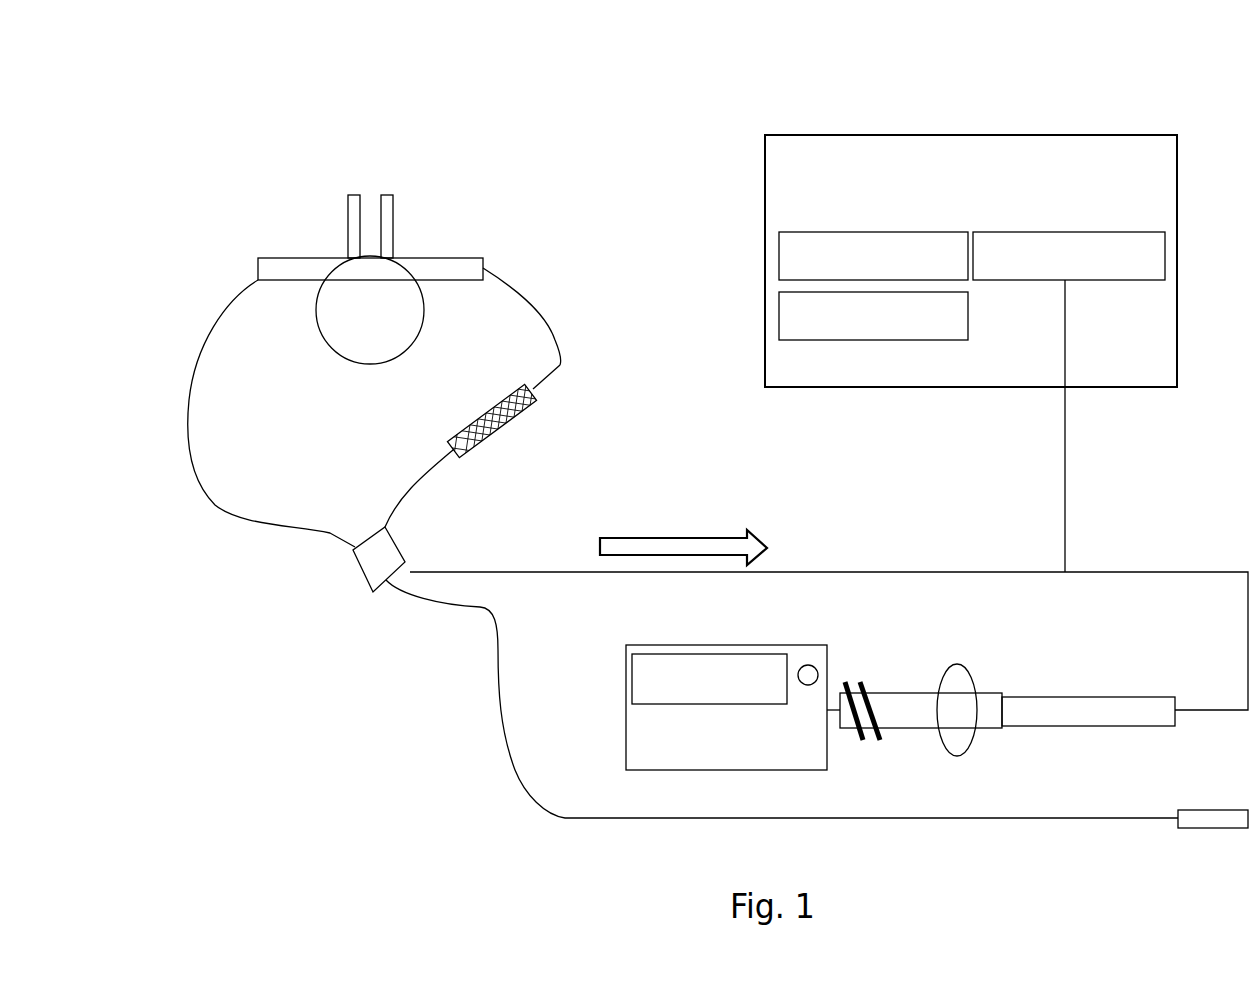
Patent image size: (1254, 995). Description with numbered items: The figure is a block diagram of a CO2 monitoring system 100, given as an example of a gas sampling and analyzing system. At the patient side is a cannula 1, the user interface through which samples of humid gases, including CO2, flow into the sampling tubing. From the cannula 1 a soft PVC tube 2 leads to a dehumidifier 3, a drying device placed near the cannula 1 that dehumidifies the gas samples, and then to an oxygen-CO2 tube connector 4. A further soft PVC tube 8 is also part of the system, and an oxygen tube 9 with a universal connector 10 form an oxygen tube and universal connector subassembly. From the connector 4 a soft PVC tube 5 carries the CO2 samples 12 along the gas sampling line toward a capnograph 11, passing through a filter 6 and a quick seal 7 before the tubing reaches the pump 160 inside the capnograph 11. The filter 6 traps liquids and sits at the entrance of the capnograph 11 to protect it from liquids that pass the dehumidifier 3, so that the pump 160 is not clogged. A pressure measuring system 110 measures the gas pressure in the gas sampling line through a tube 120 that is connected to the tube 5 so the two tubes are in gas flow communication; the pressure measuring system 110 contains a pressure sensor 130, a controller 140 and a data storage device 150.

The cannula 1 is at (483, 260).
The soft PVC tube 2 is at (560, 367).
The dehumidifier 3 is at (510, 411).
The oxygen-CO2 tube connector 4 is at (403, 558).
The soft PVC tube 5 is at (883, 568).
The filter 6 is at (1057, 697).
The quick seal 7 is at (962, 685).
The soft PVC tube 8 is at (268, 530).
The oxygen tube 9 is at (496, 726).
The universal connector 10 is at (1190, 818).
The capnograph 11 is at (626, 660).
The CO2 samples 12 is at (690, 543).
The CO2 monitoring system 100 is at (508, 127).
The pressure measuring system 110 is at (765, 160).
The tube 120 is at (1066, 455).
The pressure sensor 130 is at (1008, 232).
The controller 140 is at (793, 232).
The data storage device 150 is at (798, 340).
The pump 160 is at (641, 675).